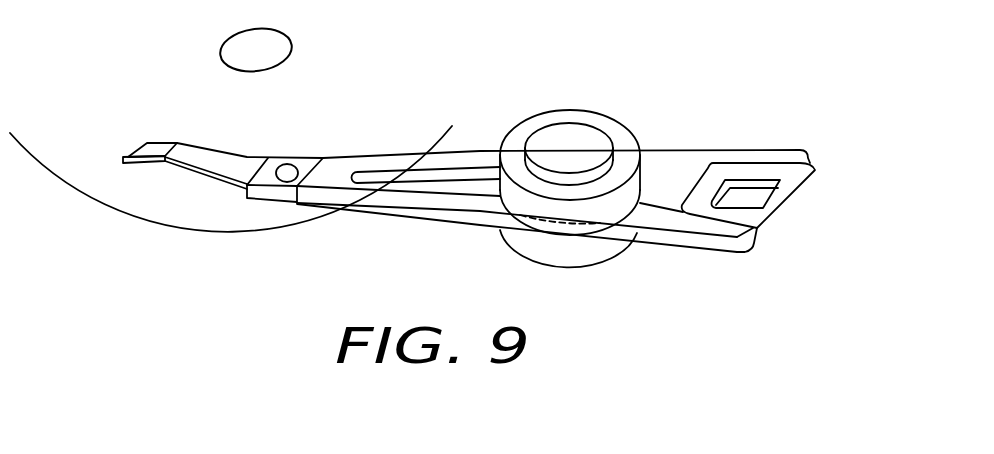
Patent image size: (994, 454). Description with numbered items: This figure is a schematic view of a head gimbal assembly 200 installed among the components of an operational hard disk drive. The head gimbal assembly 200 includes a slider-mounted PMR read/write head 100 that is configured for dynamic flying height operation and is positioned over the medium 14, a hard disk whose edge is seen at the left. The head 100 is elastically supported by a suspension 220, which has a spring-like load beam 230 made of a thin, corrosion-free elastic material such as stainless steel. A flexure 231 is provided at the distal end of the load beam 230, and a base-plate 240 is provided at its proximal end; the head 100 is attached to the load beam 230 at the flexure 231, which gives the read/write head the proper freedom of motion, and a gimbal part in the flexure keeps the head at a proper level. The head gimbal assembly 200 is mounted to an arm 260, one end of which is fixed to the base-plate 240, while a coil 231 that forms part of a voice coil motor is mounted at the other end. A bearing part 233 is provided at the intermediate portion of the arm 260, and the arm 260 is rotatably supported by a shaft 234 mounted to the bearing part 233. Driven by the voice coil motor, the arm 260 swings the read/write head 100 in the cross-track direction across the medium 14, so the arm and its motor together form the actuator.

The medium 14 is at (120, 213).
The slider-mounted PMR read/write head 100 is at (143, 148).
The head gimbal assembly 200 is at (230, 207).
The suspension 220 is at (430, 112).
The load beam 230 is at (247, 165).
The flexure 231 is at (123, 157).
The bearing part 233 is at (520, 133).
The shaft 234 is at (572, 133).
The base-plate 240 is at (315, 160).
The arm 260 is at (388, 207).